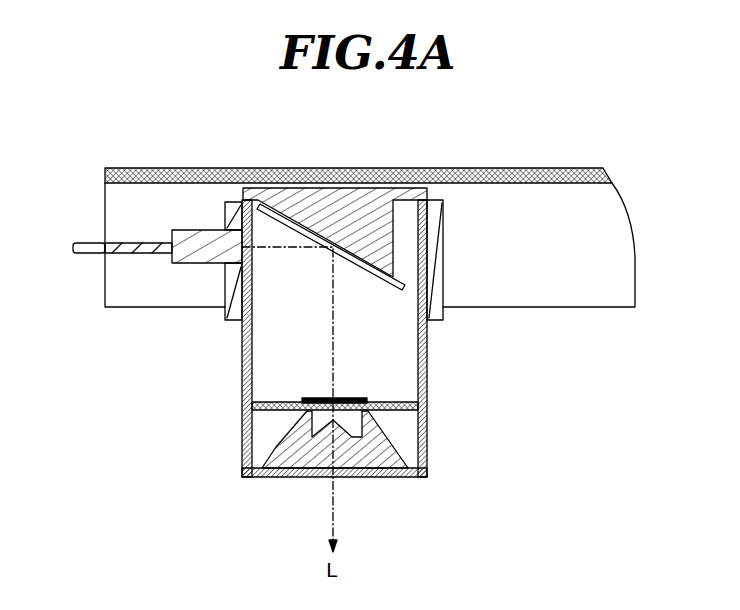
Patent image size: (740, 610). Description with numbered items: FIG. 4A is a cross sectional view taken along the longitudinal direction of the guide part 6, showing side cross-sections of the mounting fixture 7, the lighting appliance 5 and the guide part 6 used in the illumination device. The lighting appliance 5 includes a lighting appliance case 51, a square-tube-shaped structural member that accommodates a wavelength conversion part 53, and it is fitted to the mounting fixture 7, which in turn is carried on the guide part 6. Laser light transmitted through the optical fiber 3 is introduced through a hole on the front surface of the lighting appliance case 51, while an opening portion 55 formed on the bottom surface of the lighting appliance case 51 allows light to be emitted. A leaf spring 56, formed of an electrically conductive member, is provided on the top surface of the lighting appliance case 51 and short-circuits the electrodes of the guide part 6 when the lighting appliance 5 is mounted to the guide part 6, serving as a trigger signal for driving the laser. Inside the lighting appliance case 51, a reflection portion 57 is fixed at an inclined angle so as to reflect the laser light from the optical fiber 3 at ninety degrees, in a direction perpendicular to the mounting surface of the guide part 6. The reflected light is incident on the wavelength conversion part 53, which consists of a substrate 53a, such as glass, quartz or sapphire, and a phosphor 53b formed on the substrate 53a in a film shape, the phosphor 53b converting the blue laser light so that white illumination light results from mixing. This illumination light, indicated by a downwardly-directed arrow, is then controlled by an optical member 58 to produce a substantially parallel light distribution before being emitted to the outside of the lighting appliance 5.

The optical fiber 3 is at (90, 244).
The lighting appliance 5 is at (351, 338).
The guide part 6 is at (494, 168).
The mounting fixture 7 is at (449, 271).
The lighting appliance case 51 is at (241, 352).
The wavelength conversion part 53 is at (402, 372).
The substrate 53a is at (393, 402).
The phosphor 53b is at (352, 399).
The opening portion 55 is at (380, 478).
The leaf spring 56 is at (328, 188).
The reflection portion 57 is at (367, 266).
The optical member 58 is at (383, 448).